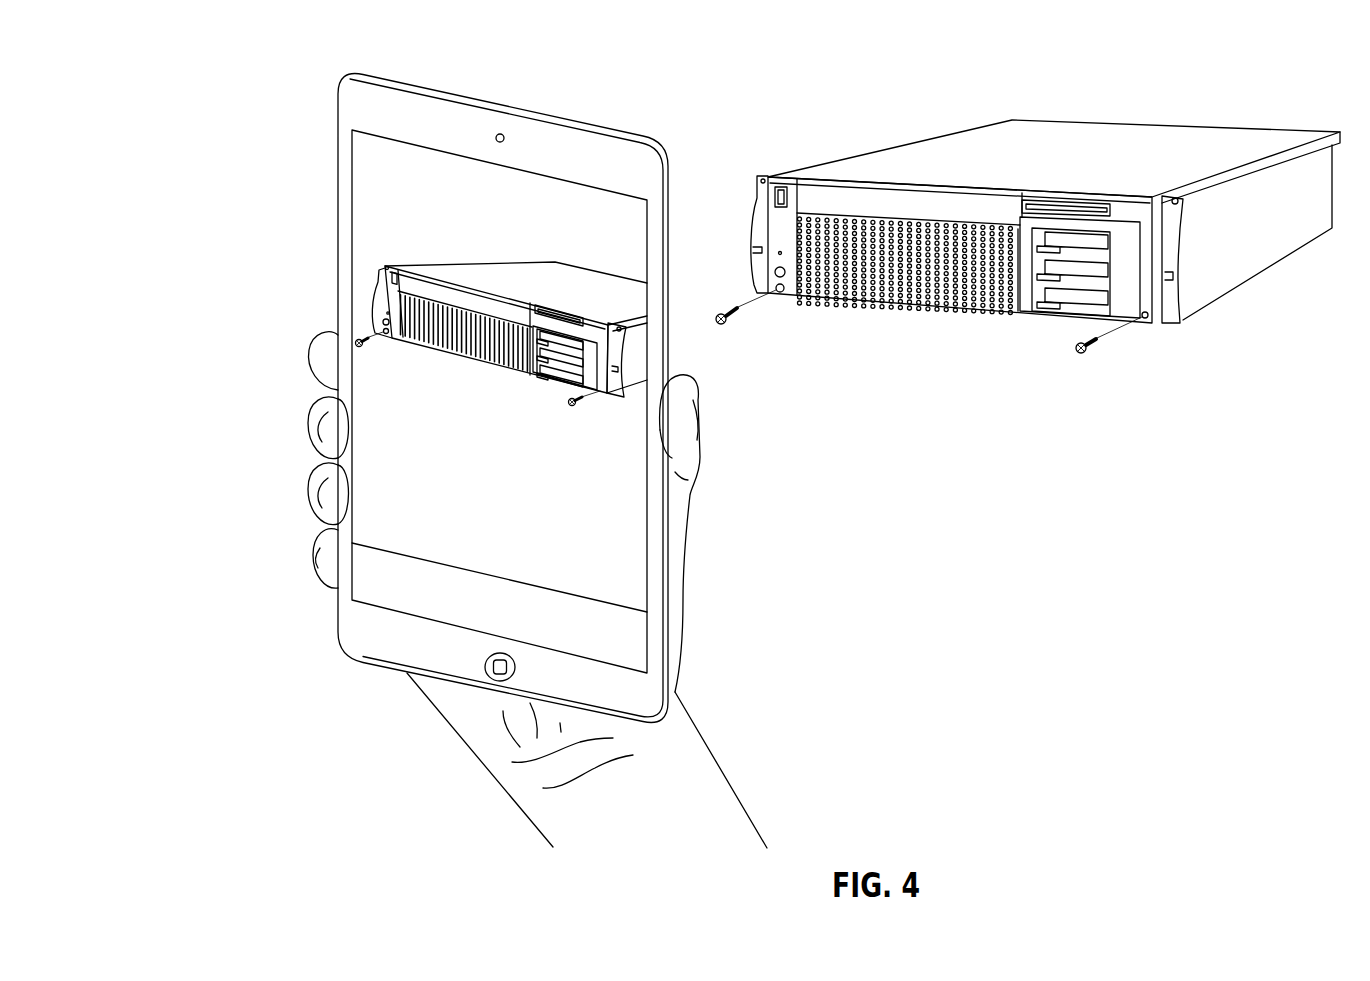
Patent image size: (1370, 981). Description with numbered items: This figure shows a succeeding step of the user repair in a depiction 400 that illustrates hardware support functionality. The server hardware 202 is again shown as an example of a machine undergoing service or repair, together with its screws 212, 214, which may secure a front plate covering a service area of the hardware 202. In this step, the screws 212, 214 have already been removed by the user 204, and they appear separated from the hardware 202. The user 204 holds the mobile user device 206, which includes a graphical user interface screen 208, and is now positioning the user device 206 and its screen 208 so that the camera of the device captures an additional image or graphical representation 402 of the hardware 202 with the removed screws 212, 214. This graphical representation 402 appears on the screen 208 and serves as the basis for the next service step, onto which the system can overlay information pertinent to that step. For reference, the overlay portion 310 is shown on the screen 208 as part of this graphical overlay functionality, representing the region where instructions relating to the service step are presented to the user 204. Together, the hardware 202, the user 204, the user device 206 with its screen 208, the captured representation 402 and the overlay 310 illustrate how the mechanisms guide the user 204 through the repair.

The depiction 400 is at (234, 132).
The additional image/graphical representation 402 is at (386, 251).
The server hardware 202 is at (1248, 278).
The user 204 is at (702, 738).
The mobile user device 206 is at (631, 133).
The graphical user interface screen 208 is at (648, 228).
The screw 212 is at (727, 326).
The screw 214 is at (1086, 355).
The overlay portion 310 is at (393, 596).